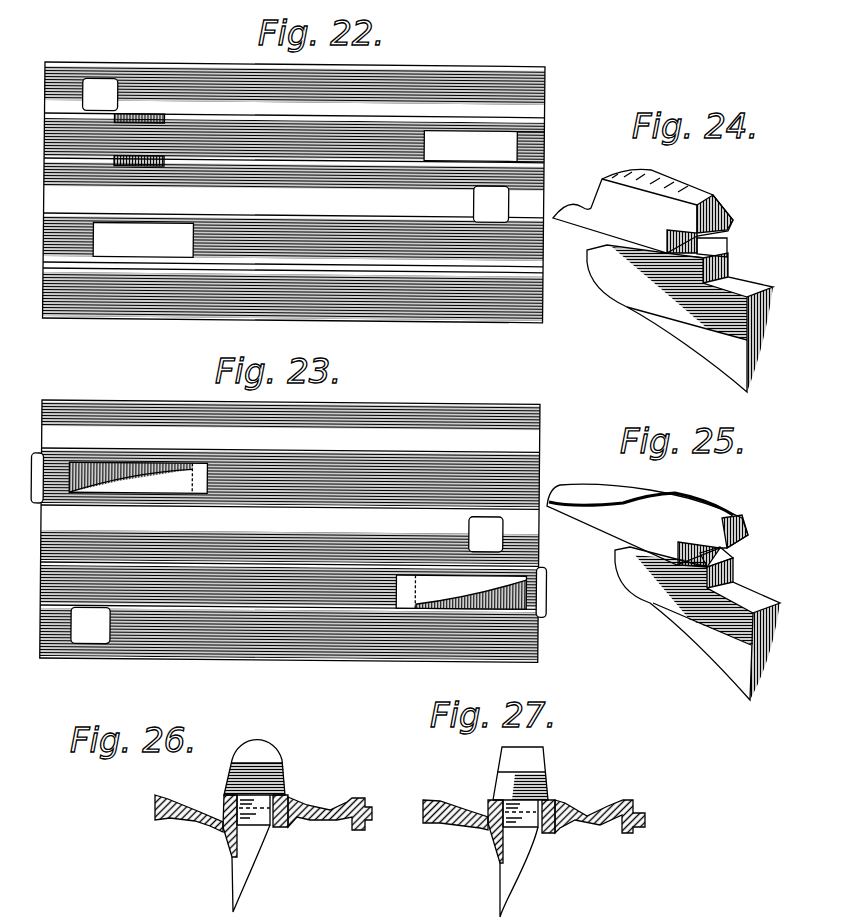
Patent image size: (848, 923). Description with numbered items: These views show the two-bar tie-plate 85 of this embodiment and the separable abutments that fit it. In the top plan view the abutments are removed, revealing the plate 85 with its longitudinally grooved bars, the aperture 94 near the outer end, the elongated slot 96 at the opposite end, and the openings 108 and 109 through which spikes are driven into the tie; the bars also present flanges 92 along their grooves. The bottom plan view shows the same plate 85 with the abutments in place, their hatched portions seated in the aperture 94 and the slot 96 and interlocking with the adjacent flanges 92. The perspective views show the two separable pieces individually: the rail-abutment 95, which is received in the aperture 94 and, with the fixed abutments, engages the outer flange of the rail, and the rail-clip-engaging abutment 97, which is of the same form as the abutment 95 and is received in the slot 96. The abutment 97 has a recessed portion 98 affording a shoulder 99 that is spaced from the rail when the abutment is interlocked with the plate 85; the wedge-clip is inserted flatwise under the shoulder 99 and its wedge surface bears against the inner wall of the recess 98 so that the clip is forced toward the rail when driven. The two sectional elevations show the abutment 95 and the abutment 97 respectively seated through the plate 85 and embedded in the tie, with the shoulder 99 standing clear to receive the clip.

In FIG. 22, the plate 85 is at (294, 192).
In FIG. 23, the plate 85 is at (290, 531).
In FIG. 26, the plate 85 is at (330, 823).
In FIG. 27, the plate 85 is at (475, 825).
In FIG. 22, the flange 92 is at (147, 157).
In FIG. 22, the aperture 94 is at (143, 240).
In FIG. 22, the elongated slot 96 is at (484, 147).
In FIG. 24, the rail-clip-engaging abutment 97 is at (643, 211).
In FIG. 27, the rail-clip-engaging abutment 97 is at (543, 785).
In FIG. 24, the recessed portion 98 is at (713, 238).
In FIG. 24, the shoulder 99 is at (720, 208).
In FIG. 27, the shoulder 99 is at (535, 762).
In FIG. 25, the abutment 95 is at (683, 522).
In FIG. 26, the abutment 95 is at (260, 783).
In FIG. 22, the opening 108 is at (98, 88).
In FIG. 22, the opening 109 is at (502, 193).